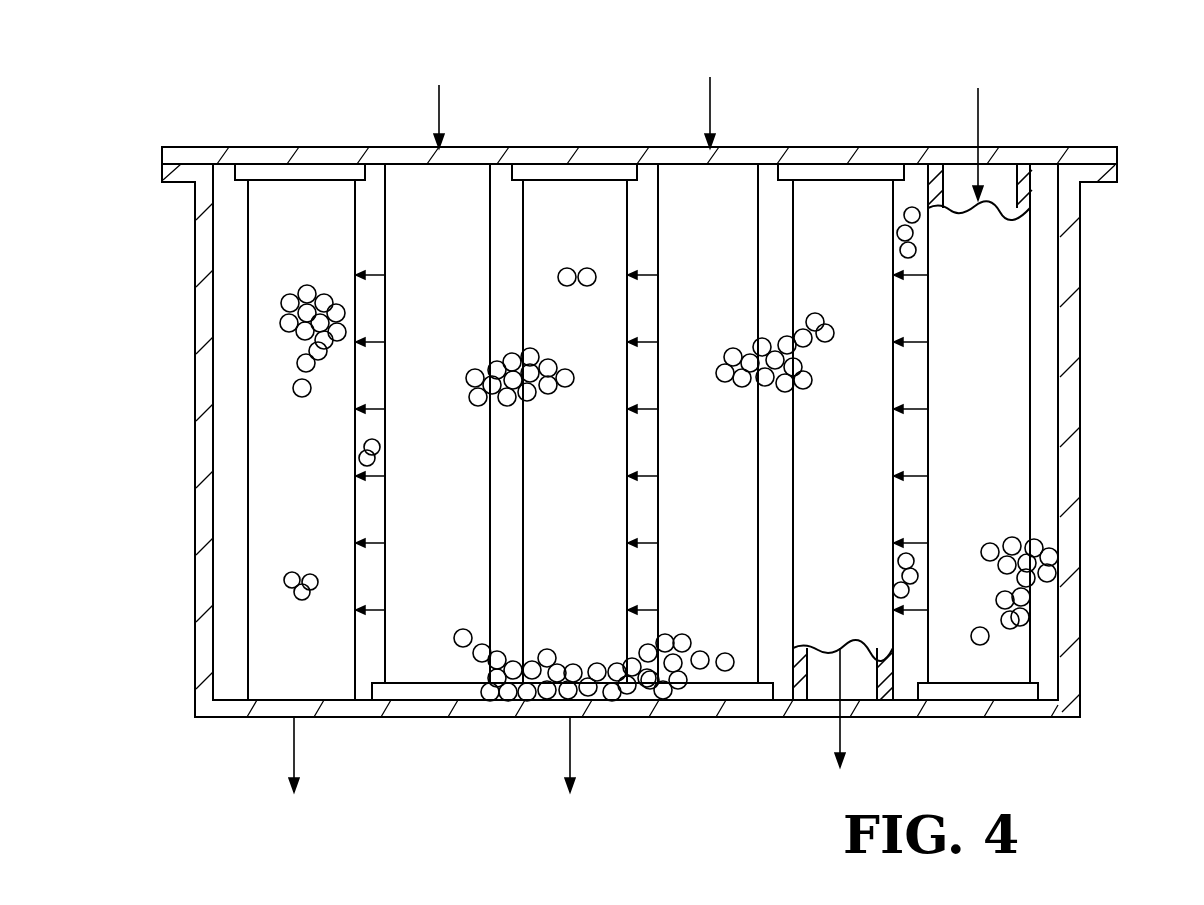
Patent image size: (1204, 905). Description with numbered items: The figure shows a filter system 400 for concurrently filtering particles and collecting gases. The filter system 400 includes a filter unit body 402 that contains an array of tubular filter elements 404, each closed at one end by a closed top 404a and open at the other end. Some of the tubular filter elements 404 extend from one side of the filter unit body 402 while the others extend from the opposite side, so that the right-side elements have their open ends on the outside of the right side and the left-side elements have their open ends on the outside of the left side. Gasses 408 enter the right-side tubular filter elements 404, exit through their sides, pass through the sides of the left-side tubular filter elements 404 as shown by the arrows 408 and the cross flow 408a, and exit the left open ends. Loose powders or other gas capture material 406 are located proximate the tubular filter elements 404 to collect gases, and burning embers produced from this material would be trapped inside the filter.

The filter system 400 is at (617, 70).
The filter unit body 402 is at (1083, 326).
The tubular filter elements 404 is at (330, 231).
The closed tops 404a is at (328, 170).
The gas capture material 406 is at (310, 396).
The gasses 408 is at (441, 112).
The cross flow 408a is at (882, 615).